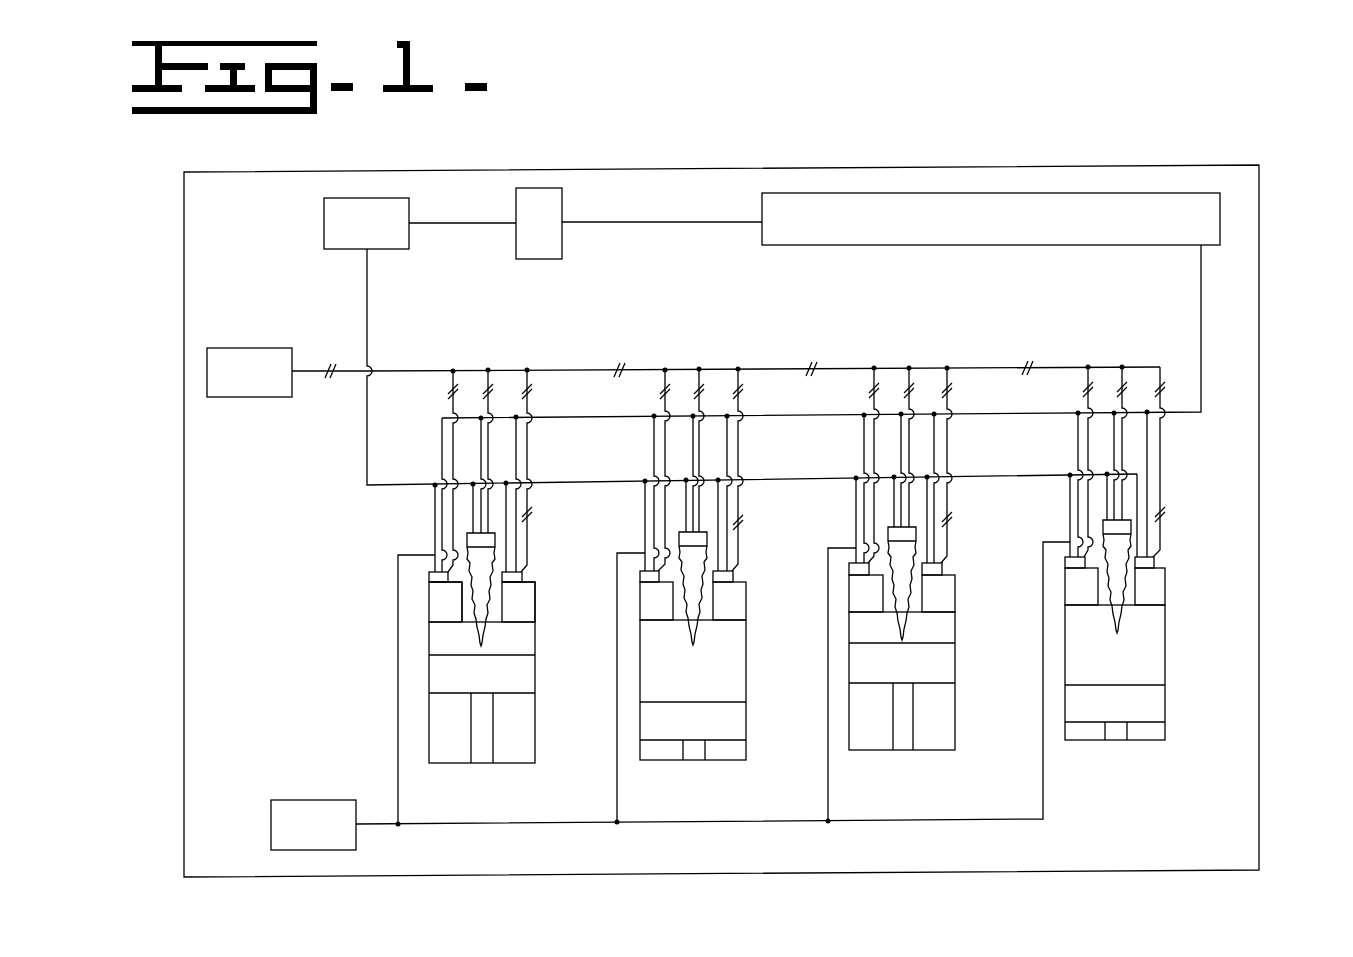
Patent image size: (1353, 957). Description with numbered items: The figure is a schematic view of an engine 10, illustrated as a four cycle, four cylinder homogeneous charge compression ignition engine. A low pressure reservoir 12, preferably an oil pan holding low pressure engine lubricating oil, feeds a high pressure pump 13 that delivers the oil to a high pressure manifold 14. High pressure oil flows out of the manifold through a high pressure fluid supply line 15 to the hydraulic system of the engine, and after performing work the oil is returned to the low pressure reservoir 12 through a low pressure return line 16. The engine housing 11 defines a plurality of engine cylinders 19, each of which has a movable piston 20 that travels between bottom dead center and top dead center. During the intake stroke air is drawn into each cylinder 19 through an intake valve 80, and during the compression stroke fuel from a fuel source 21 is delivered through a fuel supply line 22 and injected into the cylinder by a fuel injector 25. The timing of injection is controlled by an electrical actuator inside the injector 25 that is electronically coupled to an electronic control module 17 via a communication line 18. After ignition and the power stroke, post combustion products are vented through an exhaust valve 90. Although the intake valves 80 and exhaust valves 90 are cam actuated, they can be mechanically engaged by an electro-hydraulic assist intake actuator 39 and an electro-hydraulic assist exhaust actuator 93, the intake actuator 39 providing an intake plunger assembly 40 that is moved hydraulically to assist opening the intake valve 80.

The engine 10 is at (1268, 352).
The engine housing 11 is at (1262, 253).
The low pressure reservoir 12 is at (324, 225).
The high pressure pump 13 is at (516, 205).
The high pressure manifold 14 is at (763, 210).
The high pressure fluid supply line 15 is at (1201, 306).
The low pressure return line 16 is at (367, 310).
The electronic control module 17 is at (258, 348).
The communication line 18 is at (578, 371).
The engine cylinder 19 is at (535, 745).
The piston 20 is at (514, 694).
The fuel source 21 is at (300, 800).
The fuel supply line 22 is at (488, 824).
The fuel injector 25 is at (495, 545).
The electro-hydraulic assist intake actuator 39 is at (429, 573).
The intake plunger assembly 40 is at (408, 581).
The intake valve 80 is at (429, 617).
The exhaust valve 90 is at (535, 592).
The electro-hydraulic assist exhaust actuator 93 is at (522, 563).